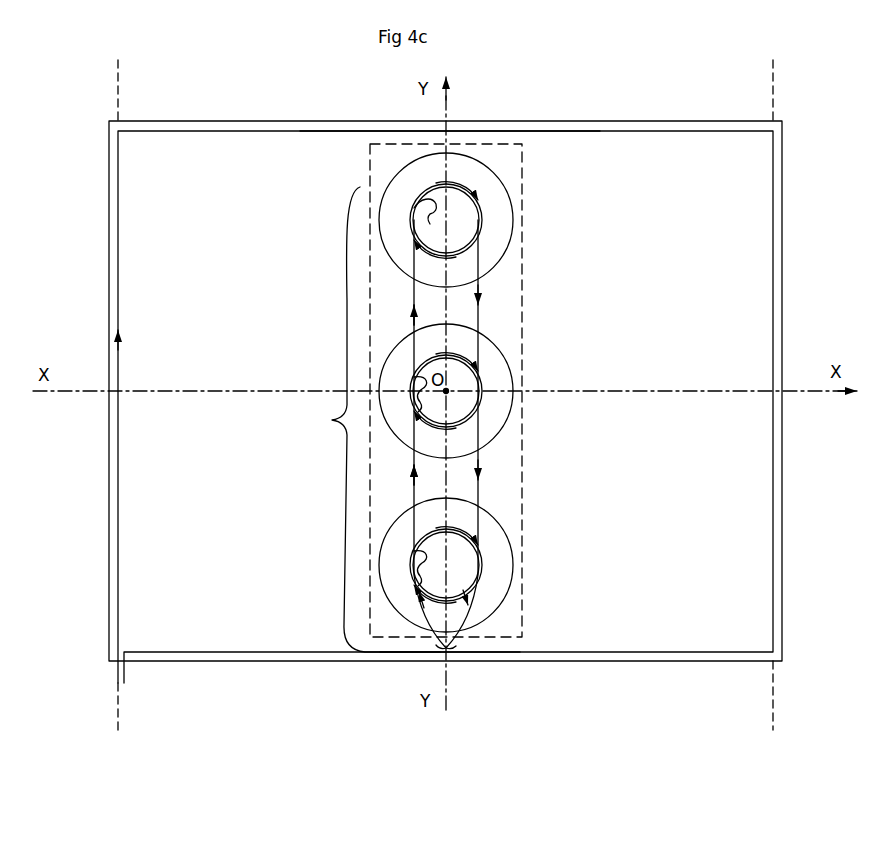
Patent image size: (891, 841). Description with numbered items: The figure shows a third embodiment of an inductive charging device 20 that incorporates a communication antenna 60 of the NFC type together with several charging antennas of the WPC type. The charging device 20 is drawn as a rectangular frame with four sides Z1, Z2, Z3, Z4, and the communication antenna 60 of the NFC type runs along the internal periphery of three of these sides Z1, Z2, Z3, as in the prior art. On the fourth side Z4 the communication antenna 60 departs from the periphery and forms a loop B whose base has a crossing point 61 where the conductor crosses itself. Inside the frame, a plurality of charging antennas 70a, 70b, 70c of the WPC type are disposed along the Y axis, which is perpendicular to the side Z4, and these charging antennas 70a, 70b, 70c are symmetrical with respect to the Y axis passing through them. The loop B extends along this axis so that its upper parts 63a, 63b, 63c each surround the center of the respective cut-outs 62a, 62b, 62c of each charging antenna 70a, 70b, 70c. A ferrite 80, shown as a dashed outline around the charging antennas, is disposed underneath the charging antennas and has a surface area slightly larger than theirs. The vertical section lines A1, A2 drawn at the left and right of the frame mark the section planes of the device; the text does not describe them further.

The charging device 20 is at (782, 222).
The communication antenna of the NFC type 60 is at (516, 131).
The crossing point 61 is at (454, 660).
The cut-out 62a is at (436, 578).
The cut-out 62b is at (432, 405).
The cut-out 62c is at (418, 227).
The upper part 63a is at (480, 543).
The upper part 63b is at (480, 407).
The upper part 63c is at (480, 227).
The charging antenna of the WPC type 70a is at (505, 522).
The charging antenna of the WPC type 70b is at (505, 348).
The charging antenna of the WPC type 70c is at (505, 178).
The ferrite 80 is at (527, 428).
The side Z1 is at (108, 318).
The side Z2 is at (351, 121).
The side Z3 is at (782, 572).
The side Z4 is at (347, 661).
The section line A1 is at (118, 408).
The section line A2 is at (768, 408).
The loop B is at (377, 419).